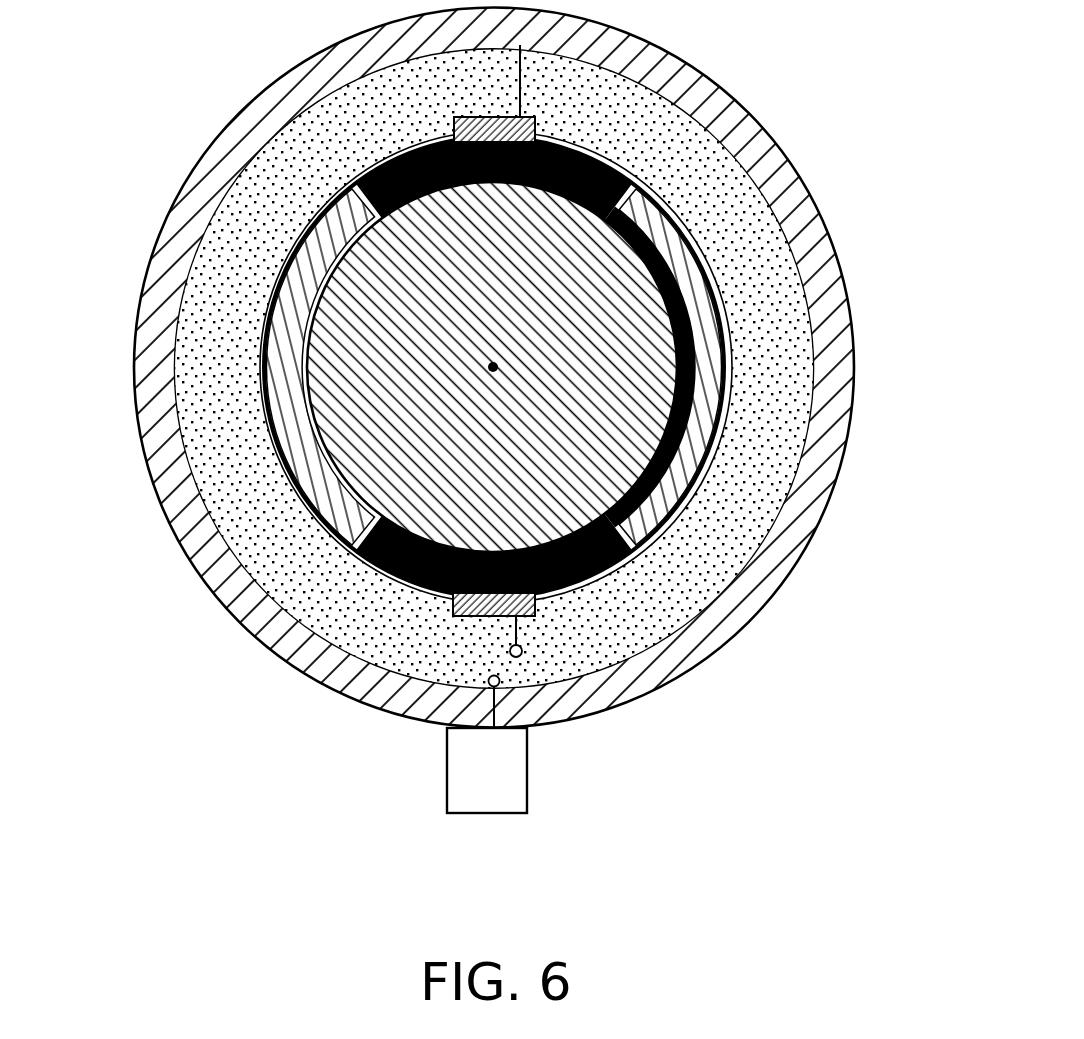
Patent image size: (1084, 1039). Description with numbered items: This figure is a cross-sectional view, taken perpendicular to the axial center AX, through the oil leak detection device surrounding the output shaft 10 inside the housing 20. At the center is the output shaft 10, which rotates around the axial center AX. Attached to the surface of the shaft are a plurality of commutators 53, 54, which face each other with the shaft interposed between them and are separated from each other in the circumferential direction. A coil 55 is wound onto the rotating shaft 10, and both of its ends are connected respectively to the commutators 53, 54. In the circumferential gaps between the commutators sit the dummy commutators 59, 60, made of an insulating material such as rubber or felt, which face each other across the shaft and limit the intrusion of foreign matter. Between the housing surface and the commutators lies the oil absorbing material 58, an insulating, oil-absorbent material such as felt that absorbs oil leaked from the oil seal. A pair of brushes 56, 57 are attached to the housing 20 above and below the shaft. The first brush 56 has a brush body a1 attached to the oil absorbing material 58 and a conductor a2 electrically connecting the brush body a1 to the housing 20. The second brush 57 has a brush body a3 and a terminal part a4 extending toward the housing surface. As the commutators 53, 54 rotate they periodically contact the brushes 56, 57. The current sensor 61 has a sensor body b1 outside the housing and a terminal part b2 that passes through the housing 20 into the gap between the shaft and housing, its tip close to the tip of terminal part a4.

The housing 20 is at (203, 158).
The output shaft 10 is at (358, 308).
The axial center AX is at (493, 369).
The commutator 53 is at (632, 170).
The commutator 54 is at (413, 578).
The coil 55 is at (673, 273).
The dummy commutator 60 is at (313, 470).
The oil absorbing material 58 is at (763, 300).
The dummy commutator 59 is at (687, 447).
The first brush 56 is at (689, 88).
The brush body a1 is at (535, 128).
The conductor a2 is at (520, 95).
The second brush 57 is at (687, 612).
The brush body a3 is at (535, 602).
The terminal part a4 is at (517, 637).
The current sensor 61 is at (614, 745).
The sensor body b1 is at (527, 768).
The terminal part b2 is at (494, 700).